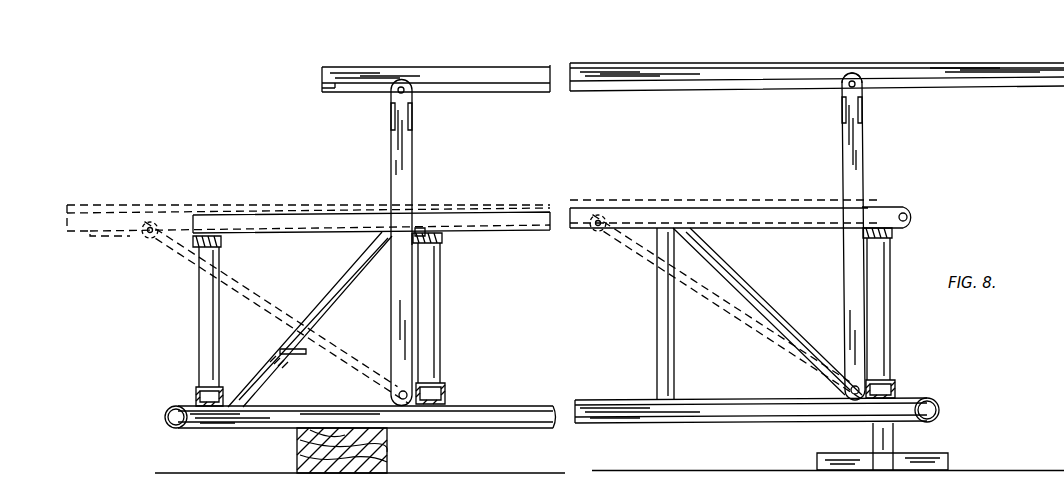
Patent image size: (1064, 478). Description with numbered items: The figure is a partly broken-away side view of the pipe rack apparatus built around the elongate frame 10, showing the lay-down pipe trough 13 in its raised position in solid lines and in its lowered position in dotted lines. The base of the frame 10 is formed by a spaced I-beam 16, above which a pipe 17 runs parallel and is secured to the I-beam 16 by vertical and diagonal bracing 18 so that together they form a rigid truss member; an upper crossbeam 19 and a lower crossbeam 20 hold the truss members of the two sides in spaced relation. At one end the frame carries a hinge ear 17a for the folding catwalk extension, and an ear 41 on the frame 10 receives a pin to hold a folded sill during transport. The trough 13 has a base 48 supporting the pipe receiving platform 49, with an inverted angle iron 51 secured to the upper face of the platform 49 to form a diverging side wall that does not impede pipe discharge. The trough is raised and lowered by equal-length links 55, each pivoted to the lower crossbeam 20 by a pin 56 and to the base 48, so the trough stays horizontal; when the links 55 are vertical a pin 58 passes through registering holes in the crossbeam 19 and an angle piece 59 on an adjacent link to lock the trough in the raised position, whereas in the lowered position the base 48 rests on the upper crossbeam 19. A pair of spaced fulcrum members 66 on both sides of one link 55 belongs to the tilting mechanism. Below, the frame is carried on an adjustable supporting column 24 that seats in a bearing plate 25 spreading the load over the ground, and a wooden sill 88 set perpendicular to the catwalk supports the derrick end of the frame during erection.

The elongate frame section 10 is at (745, 424).
The lay-down pipe trough 13 is at (703, 58).
The I-beam 16 is at (775, 410).
The pipe 17 is at (250, 212).
The hinge ear 17a is at (912, 210).
The vertical and diagonal bracing 18 is at (198, 318).
The upper crossbeam 19 is at (222, 240).
The lower crossbeam 20 is at (196, 394).
The supporting column 24 is at (895, 438).
The bearing plate 25 is at (945, 458).
The ear 41 is at (300, 356).
The trough base 48 is at (336, 89).
The pipe receiving platform 49 is at (70, 207).
The inverted angle iron 51 is at (993, 60).
The link 55 is at (390, 165).
The pin 56 is at (398, 395).
The pin 58 is at (425, 248).
The angle piece 59 is at (403, 246).
The fulcrum member 66 is at (390, 124).
The wooden sill 88 is at (387, 462).